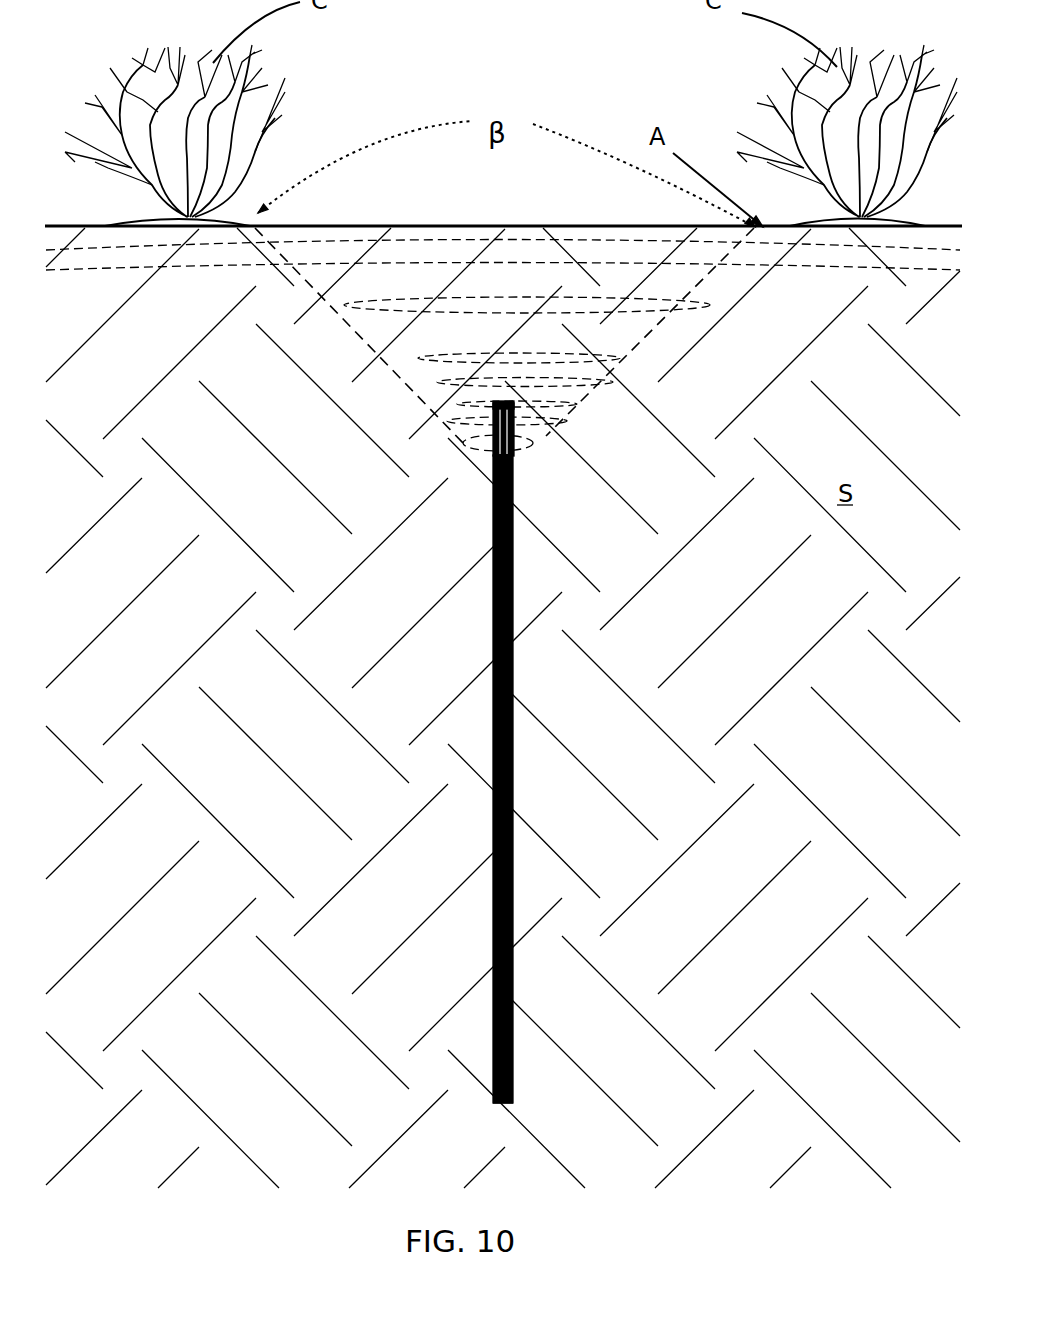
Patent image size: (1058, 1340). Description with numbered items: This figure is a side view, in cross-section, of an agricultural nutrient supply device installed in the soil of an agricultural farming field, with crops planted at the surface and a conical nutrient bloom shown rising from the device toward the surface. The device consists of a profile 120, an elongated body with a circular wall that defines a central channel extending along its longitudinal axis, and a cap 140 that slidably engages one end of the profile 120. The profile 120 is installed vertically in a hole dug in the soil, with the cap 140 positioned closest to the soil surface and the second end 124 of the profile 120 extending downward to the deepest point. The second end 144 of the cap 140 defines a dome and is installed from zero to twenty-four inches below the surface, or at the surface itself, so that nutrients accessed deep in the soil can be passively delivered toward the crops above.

The profile 120 is at (508, 747).
The second end of the profile 124 is at (504, 1102).
The cap 140 is at (494, 426).
The second end of the cap 144 is at (507, 401).